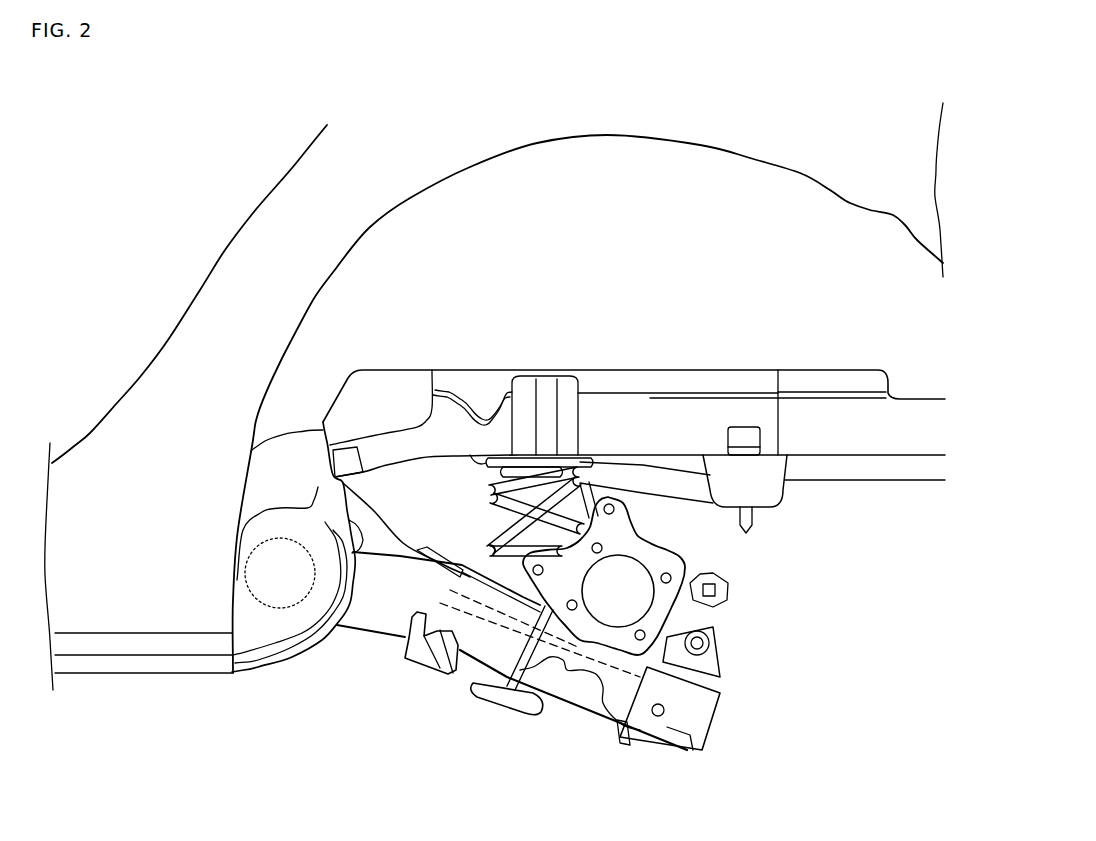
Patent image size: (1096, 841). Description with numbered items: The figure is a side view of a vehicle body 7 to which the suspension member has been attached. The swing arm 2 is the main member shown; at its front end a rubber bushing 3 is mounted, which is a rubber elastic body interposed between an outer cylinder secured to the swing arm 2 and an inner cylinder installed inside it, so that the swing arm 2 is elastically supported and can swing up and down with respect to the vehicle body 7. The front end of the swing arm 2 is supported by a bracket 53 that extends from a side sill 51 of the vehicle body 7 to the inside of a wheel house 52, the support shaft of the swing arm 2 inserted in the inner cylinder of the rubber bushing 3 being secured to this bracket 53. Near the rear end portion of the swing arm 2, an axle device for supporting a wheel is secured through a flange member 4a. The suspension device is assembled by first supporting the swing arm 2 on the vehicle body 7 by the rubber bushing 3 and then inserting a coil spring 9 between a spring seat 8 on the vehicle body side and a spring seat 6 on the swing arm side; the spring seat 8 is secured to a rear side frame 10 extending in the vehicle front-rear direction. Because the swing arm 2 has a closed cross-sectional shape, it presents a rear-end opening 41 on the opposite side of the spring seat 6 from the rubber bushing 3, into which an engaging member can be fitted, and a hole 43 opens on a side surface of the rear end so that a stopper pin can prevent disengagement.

The swing arm 2 is at (363, 630).
The rubber bushing 3 is at (302, 605).
The flange member 4a is at (618, 537).
The spring seat 6 is at (488, 612).
The vehicle body 7 is at (215, 262).
The spring seat 8 is at (477, 465).
The coil spring 9 is at (493, 496).
The rear side frame 10 is at (643, 415).
The rear-end opening 41 is at (700, 748).
The hole 43 is at (657, 717).
The side sill 51 is at (141, 617).
The wheel house 52 is at (474, 163).
The bracket 53 is at (258, 627).